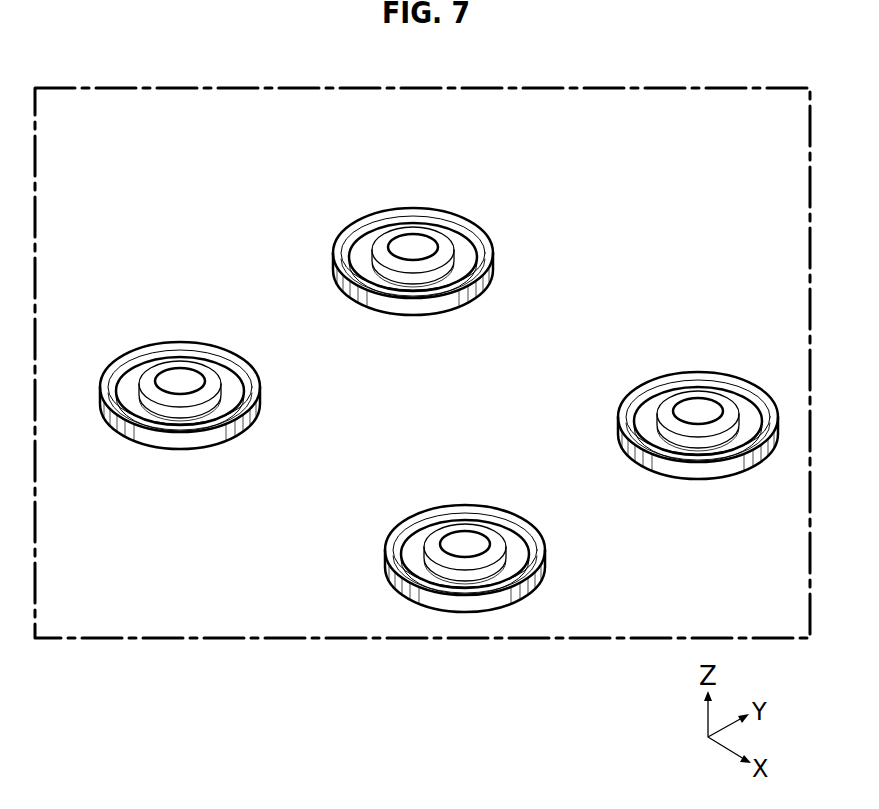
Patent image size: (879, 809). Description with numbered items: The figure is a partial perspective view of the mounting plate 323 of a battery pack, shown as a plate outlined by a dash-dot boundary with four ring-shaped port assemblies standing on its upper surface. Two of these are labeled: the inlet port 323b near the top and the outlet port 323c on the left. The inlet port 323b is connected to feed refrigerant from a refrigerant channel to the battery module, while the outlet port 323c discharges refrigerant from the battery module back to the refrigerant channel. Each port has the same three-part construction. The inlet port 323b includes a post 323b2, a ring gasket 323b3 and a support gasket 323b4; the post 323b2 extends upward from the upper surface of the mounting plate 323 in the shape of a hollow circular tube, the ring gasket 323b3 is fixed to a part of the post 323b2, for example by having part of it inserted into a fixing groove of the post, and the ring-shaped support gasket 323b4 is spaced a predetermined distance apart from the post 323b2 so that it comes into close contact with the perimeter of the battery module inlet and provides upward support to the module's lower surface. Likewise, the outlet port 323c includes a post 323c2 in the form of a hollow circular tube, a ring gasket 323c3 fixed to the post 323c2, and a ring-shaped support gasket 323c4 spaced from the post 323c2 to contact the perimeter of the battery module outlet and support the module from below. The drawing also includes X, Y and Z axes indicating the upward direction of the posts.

The mounting plate 323 is at (211, 176).
The inlet port 323b is at (530, 158).
The post 323b2 is at (413, 224).
The ring gasket 323b3 is at (439, 229).
The support gasket 323b4 is at (395, 238).
The outlet port 323c is at (298, 293).
The post 323c2 is at (180, 358).
The ring gasket 323c3 is at (206, 363).
The support gasket 323c4 is at (164, 372).